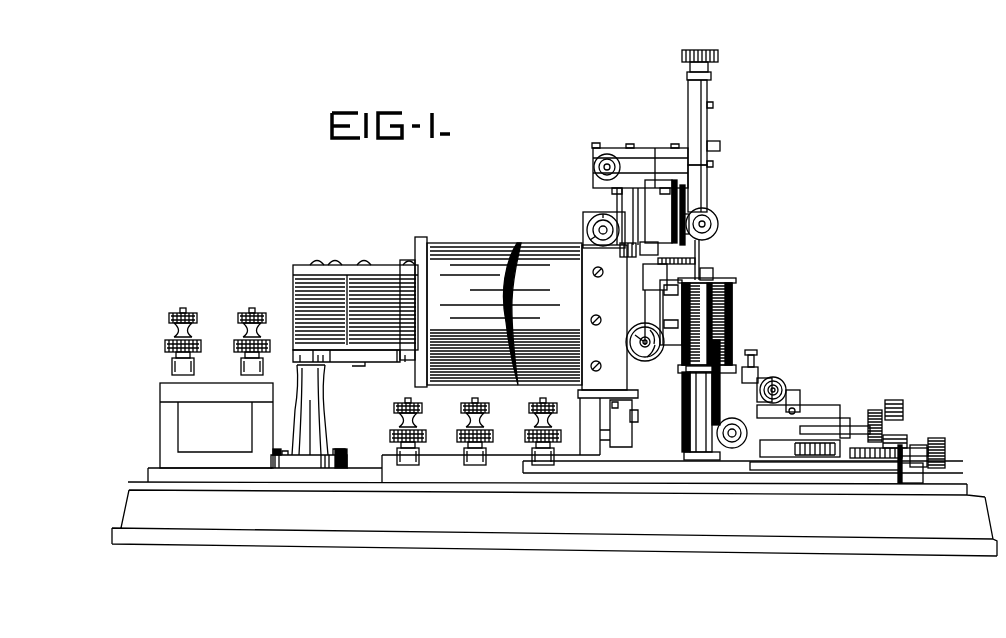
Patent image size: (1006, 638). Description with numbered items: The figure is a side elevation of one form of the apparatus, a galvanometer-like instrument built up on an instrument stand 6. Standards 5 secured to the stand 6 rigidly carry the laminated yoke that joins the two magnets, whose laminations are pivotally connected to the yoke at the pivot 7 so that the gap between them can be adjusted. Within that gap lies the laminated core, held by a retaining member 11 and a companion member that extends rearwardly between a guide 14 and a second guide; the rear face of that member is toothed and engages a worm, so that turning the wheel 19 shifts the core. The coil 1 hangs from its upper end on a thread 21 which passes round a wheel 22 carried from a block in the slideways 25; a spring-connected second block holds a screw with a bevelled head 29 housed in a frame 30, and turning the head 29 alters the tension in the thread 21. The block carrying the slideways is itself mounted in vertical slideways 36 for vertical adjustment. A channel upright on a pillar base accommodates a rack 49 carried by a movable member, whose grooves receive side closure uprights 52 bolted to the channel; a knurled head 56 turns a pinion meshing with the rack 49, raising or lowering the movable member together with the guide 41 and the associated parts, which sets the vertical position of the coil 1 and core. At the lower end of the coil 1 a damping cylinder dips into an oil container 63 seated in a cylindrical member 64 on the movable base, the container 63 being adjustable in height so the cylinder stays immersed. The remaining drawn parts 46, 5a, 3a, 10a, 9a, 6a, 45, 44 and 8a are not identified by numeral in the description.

The coil 1 is at (217, 334).
The retaining member 11 is at (460, 420).
The guide 14 is at (640, 453).
The standard 5 is at (307, 424).
The instrument stand 6 is at (340, 481).
The pivot 7 is at (364, 265).
The side closure upright 52 is at (482, 275).
The wheel 19 is at (640, 336).
The knurled head 56 is at (590, 218).
The head block 46 is at (645, 210).
The vertical slideways 36 is at (680, 207).
The coupling 5a is at (668, 275).
The bevelled head 29 is at (714, 58).
The slideways 25 is at (708, 126).
The wheel 22 is at (720, 148).
The thread 21 is at (710, 196).
The wheel 3a is at (718, 226).
The top plate 10a is at (728, 287).
The gear stack 9a is at (722, 348).
The oil container 63 is at (692, 392).
The cylinder 6a is at (698, 417).
The gear 45 is at (772, 414).
The guide 41 is at (790, 398).
The cylindrical member 64 is at (758, 370).
The frame 30 is at (831, 449).
The gear 44 is at (850, 425).
The rack 49 is at (910, 445).
The block 8a is at (918, 478).